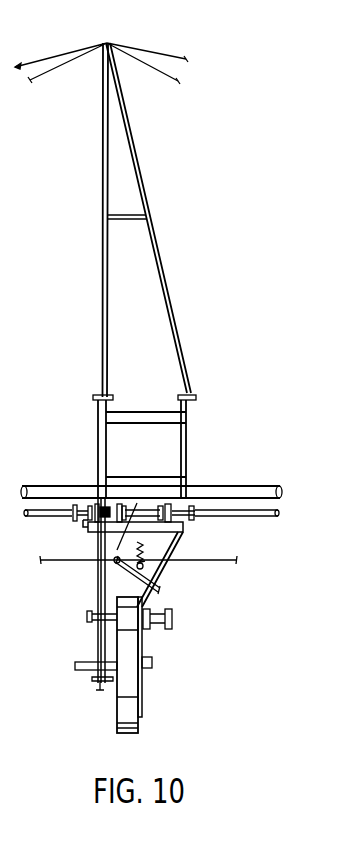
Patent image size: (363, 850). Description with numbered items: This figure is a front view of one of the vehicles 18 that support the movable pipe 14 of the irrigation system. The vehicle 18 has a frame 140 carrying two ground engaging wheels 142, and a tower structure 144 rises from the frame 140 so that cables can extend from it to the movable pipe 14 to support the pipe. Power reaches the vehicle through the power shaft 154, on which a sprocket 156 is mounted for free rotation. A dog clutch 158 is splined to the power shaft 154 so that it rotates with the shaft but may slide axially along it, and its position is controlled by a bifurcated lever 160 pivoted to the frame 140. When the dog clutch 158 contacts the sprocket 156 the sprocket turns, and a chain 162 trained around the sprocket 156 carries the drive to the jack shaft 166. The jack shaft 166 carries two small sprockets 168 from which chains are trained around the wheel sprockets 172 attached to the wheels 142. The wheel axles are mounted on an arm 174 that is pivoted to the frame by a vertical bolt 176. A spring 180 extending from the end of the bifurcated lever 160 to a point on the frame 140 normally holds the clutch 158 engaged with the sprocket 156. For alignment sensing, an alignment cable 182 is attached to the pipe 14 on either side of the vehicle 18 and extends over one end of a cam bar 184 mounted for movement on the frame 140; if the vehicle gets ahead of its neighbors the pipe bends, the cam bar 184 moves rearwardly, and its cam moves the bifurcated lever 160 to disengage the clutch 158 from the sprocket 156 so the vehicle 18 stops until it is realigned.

The vehicle 18 is at (254, 454).
The movable pipe 14 is at (228, 487).
The frame 140 is at (95, 403).
The ground engaging wheels 142 is at (132, 733).
The tower structure 144 is at (108, 364).
The power shaft 154 is at (280, 512).
The sprocket 156 is at (108, 505).
The dog clutch 158 is at (122, 505).
The bifurcated lever 160 is at (96, 544).
The chain 162 is at (95, 565).
The jack shaft 166 is at (172, 618).
The small sprockets 168 is at (148, 627).
The wheel sprockets 172 is at (142, 710).
The arm 174 is at (81, 661).
The vertical bolt 176 is at (94, 691).
The spring 180 is at (178, 544).
The alignment cable 182 is at (240, 560).
The cam bar 184 is at (161, 560).